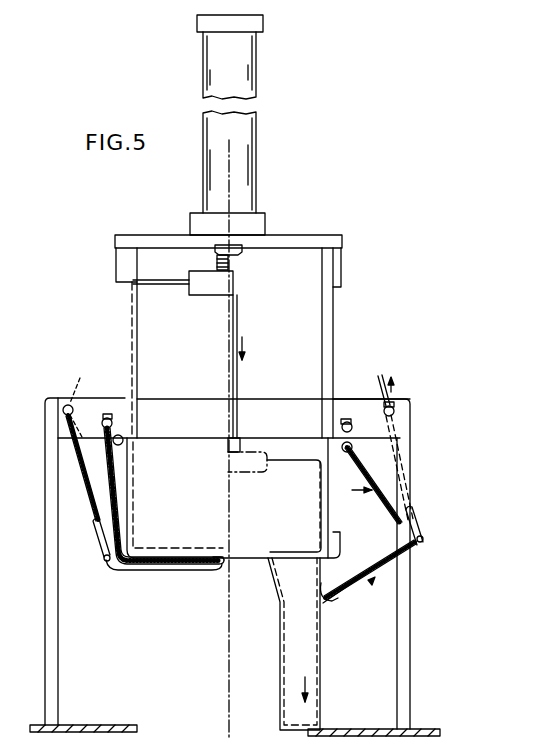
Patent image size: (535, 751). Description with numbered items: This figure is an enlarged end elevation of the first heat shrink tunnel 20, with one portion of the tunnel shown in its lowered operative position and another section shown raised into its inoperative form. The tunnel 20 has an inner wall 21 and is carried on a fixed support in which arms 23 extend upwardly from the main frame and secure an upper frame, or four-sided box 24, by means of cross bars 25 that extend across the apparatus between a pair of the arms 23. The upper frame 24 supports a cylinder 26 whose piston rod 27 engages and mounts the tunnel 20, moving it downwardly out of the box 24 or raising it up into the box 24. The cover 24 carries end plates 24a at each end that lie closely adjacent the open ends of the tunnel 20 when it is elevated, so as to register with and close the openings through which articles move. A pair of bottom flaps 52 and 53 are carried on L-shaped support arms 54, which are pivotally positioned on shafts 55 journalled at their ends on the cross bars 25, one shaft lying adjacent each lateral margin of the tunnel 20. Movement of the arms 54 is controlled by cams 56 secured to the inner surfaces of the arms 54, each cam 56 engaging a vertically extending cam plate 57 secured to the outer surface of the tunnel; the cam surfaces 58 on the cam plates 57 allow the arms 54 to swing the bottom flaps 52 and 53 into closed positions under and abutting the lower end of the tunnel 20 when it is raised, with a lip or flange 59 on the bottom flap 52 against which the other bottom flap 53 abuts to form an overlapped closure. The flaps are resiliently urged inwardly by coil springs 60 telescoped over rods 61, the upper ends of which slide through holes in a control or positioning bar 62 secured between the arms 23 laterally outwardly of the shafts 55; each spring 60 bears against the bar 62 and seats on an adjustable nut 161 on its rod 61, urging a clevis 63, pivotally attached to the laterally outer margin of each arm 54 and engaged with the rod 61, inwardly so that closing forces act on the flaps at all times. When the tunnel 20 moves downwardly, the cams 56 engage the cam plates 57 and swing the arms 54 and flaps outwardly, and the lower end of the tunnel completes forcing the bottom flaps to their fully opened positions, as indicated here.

The first heat shrink tunnel 20 is at (342, 325).
The inner wall 21 is at (280, 648).
The arms 23 is at (53, 608).
The upper frame 24 is at (337, 360).
The end plates 24a is at (253, 545).
The cross bars 25 is at (195, 410).
The cylinder 26 is at (247, 162).
The piston rod 27 is at (237, 307).
The bottom flap 52 is at (167, 563).
The bottom flap 53 is at (380, 562).
The L-shaped support arms 54 is at (135, 565).
The shafts 55 is at (107, 418).
The cams 56 is at (127, 455).
The cam plate 57 is at (133, 382).
The cam surfaces 58 is at (338, 597).
The lip or flange 59 is at (223, 560).
The coil springs 60 is at (78, 457).
The rods 61 is at (66, 404).
The control or positioning bar 62 is at (427, 408).
The clevis 63 is at (102, 550).
The adjustable nut 161 is at (97, 530).